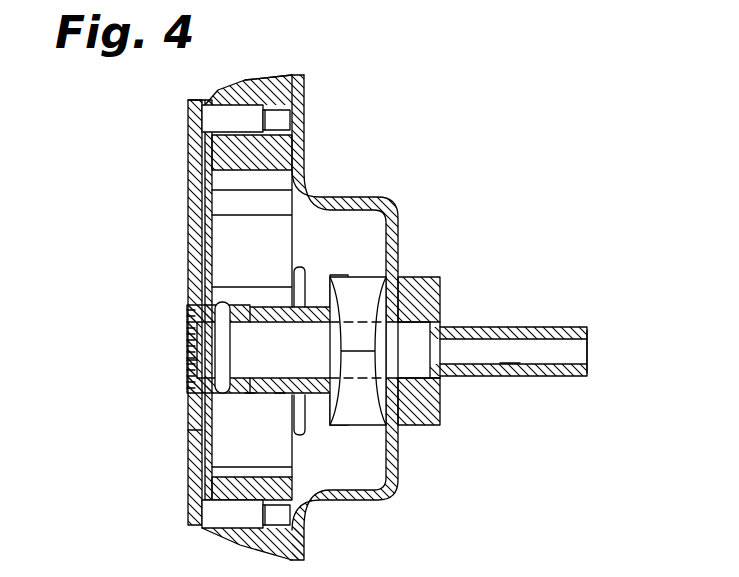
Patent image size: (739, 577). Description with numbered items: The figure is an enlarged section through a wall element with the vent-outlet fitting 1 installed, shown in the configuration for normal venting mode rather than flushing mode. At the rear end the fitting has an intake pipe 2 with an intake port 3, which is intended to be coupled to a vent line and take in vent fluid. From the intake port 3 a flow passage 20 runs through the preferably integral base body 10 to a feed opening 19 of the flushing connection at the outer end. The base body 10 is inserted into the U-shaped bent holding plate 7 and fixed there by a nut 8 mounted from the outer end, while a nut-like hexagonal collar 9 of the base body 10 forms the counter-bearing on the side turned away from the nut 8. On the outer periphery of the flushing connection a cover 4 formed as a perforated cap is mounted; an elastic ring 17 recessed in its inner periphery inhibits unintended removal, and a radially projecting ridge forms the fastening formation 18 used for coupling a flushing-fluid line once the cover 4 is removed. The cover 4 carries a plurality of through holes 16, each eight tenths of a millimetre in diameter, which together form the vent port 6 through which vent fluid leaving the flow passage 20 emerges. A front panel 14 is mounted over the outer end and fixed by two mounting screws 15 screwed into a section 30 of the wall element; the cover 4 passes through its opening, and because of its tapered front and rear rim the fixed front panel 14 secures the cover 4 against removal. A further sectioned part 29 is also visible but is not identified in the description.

The vent-outlet fitting 1 is at (445, 230).
The intake pipe 2 is at (535, 328).
The intake port 3 is at (588, 350).
The cover 4 is at (190, 395).
The vent port 6 is at (158, 362).
The holding plate 7 is at (352, 200).
The nut 8 is at (360, 290).
The hexagonal collar 9 is at (435, 278).
The base body 10 is at (320, 420).
The front panel 14 is at (190, 200).
The mounting screws 15 is at (190, 113).
The through holes 16 is at (187, 356).
The elastic ring 17 is at (188, 437).
The fastening formation 18 is at (248, 400).
The feed opening 19 is at (187, 378).
The flow passage 20 is at (280, 400).
The gasket 29 is at (200, 300).
The section of the wall element 30 is at (270, 82).